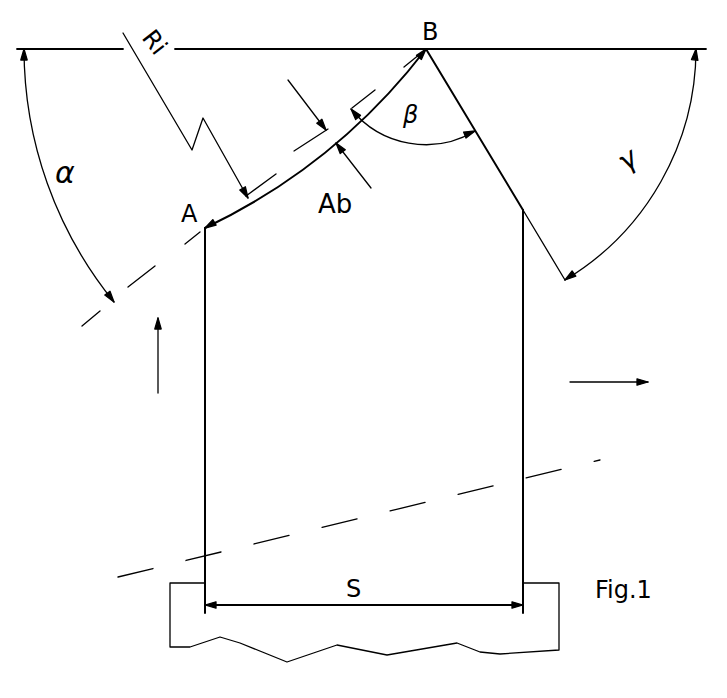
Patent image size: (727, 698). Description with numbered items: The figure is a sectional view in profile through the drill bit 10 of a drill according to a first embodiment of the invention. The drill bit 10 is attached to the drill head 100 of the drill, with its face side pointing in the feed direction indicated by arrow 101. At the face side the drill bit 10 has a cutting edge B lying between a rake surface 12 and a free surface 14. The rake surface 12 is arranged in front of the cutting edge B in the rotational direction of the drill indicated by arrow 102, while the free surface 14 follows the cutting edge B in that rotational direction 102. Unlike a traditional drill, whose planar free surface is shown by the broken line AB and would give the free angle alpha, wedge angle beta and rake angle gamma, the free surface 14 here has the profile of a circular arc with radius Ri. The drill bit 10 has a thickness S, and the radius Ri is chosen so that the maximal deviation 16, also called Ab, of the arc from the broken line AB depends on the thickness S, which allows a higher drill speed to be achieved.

The drill bit 10 is at (177, 446).
The rake surface 12 is at (492, 157).
The free surface 14 is at (283, 183).
The maximal deviation 16 is at (310, 105).
The drill head 100 is at (170, 617).
The feed direction arrow 101 is at (157, 372).
The rotational direction arrow 102 is at (577, 382).